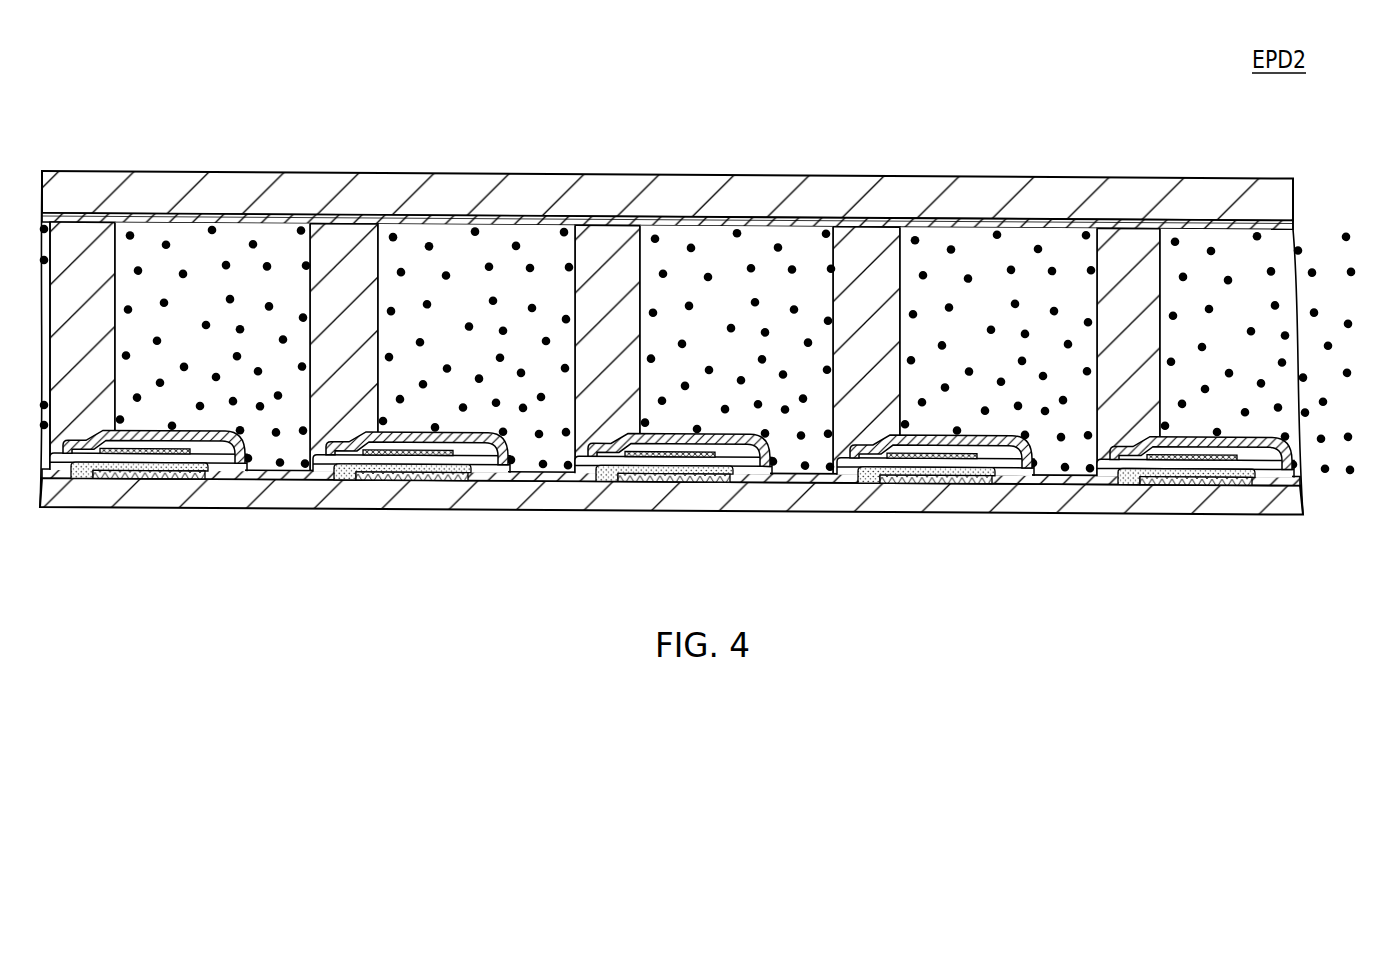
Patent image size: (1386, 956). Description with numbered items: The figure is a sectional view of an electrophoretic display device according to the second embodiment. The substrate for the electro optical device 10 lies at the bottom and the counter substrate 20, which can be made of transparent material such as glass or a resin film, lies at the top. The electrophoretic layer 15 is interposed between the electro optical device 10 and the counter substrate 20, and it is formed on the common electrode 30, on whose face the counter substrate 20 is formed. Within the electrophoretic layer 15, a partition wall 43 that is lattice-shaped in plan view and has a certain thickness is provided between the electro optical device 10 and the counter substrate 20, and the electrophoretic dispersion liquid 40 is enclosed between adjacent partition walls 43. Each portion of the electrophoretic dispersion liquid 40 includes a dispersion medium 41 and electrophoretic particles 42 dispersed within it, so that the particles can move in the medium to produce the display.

The electro optical device 10 is at (1317, 445).
The electrophoretic layer 15 is at (706, 268).
The counter substrate 20 is at (1282, 197).
The common electrode 30 is at (1293, 226).
The electrophoretic dispersion liquid 40 is at (698, 268).
The dispersion medium 41 is at (232, 232).
The electrophoretic particle 42 is at (273, 252).
The partition wall 43 is at (82, 247).